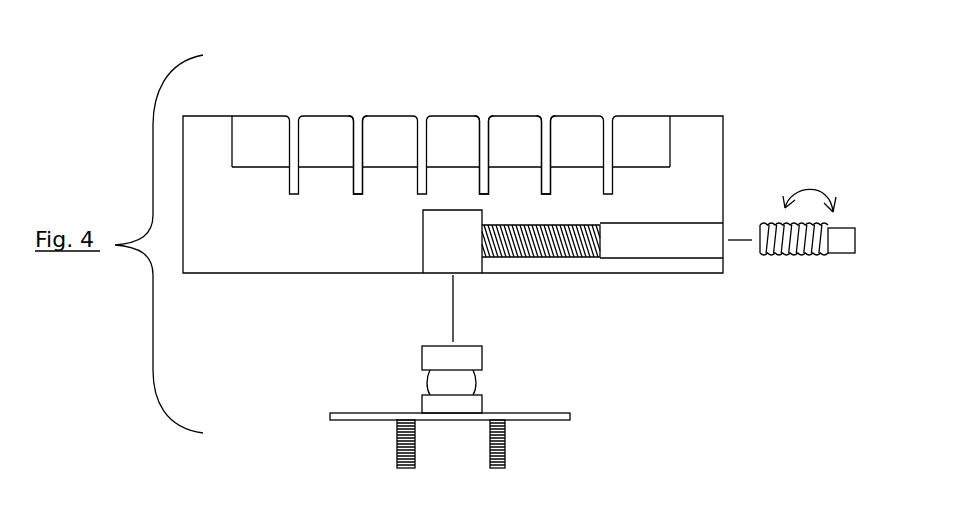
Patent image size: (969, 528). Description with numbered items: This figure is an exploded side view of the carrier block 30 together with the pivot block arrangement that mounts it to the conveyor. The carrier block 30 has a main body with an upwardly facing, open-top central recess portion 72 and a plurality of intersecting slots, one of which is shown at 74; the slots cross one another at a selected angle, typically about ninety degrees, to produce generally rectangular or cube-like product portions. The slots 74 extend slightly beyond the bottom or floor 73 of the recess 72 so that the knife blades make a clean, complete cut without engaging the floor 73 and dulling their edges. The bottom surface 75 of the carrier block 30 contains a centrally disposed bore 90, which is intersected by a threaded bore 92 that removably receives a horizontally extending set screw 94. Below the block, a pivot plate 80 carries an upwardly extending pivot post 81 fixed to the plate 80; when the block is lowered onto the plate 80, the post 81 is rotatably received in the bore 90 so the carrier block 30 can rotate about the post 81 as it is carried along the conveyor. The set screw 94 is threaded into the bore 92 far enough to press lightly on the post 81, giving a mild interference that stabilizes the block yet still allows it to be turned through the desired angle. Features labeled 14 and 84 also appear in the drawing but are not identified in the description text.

The carrier block 30 is at (737, 144).
The bottom surface 75 is at (253, 273).
The floor of recess 73 is at (255, 165).
The tab 14 is at (327, 117).
The slot 74 is at (445, 116).
The central recess portion 72 is at (642, 113).
The bore 90 is at (424, 253).
The threaded bore 92 is at (585, 258).
The set screw 94 is at (832, 258).
The pivot post 81 is at (483, 357).
The pivot plate 80 is at (538, 425).
The threaded legs 84 is at (395, 447).